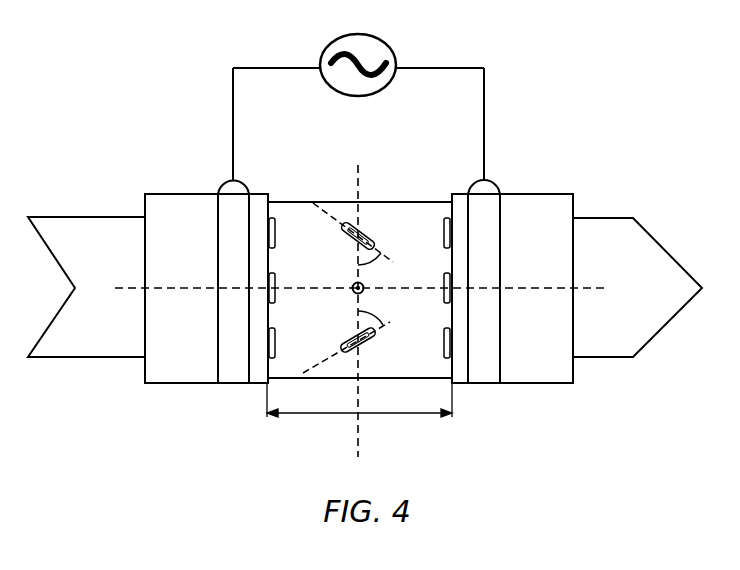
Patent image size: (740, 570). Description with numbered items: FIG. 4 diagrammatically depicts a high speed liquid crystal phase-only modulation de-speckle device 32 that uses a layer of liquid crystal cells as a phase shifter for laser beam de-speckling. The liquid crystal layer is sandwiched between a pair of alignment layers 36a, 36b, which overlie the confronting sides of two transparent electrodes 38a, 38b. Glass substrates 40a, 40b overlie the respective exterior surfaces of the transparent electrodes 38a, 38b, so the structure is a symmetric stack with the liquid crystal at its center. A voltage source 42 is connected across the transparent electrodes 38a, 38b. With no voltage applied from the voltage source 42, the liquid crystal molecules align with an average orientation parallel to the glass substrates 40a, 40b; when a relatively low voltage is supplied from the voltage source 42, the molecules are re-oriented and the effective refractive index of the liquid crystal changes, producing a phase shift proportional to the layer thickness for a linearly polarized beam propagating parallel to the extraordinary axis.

The phase-only modulation de-speckle device 32 is at (168, 90).
The alignment layer 36a is at (263, 193).
The alignment layer 36b is at (458, 198).
The transparent electrode 38a is at (222, 187).
The transparent electrode 38b is at (485, 197).
The glass substrate 40a is at (186, 370).
The glass substrate 40b is at (530, 368).
The voltage source 42 is at (385, 35).